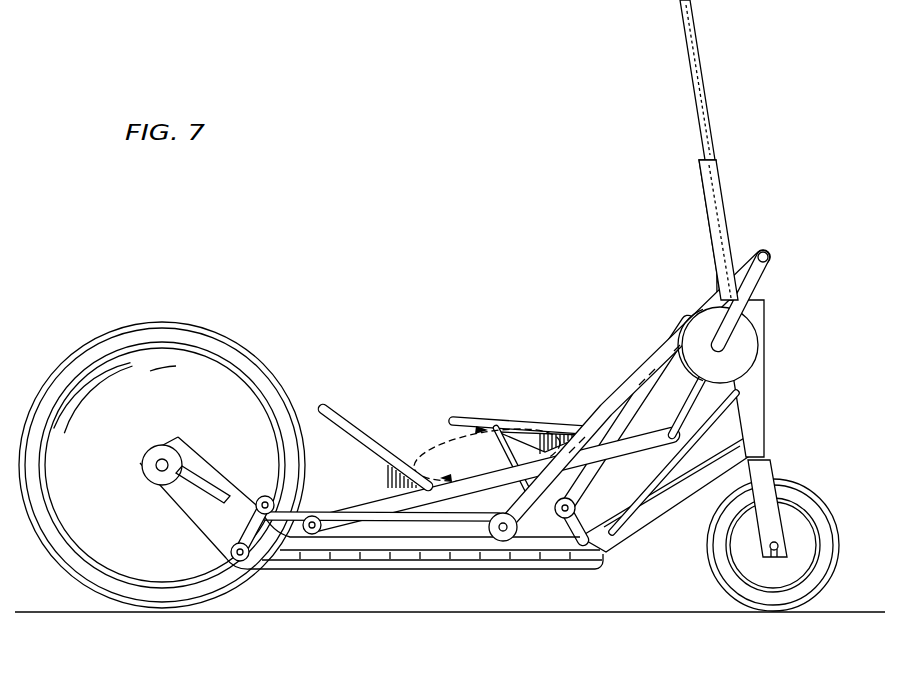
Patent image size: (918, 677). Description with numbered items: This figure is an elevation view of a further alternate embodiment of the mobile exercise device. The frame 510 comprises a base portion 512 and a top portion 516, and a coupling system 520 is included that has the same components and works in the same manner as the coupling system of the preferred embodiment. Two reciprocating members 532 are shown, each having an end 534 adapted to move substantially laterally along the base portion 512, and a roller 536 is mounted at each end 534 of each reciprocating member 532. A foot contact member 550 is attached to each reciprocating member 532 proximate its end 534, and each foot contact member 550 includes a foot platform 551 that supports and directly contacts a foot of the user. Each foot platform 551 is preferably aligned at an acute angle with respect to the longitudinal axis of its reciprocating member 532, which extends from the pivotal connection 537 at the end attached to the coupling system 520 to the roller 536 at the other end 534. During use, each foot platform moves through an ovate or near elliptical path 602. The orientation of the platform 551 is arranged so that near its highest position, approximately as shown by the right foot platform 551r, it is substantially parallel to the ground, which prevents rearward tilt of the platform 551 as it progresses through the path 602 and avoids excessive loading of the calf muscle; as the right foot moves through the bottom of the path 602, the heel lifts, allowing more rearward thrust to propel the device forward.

The frame 510 is at (762, 412).
The base portion 512 is at (442, 549).
The top portion 516 is at (721, 183).
The coupling system 520 is at (765, 320).
The reciprocating member 532 is at (622, 400).
The end 534 is at (347, 510).
The roller 536 is at (310, 514).
The pivotal connection 537 is at (766, 251).
The foot contact member 550 is at (527, 425).
The foot platform 551 is at (337, 412).
The right foot platform 551r is at (557, 423).
The path 602 is at (435, 445).